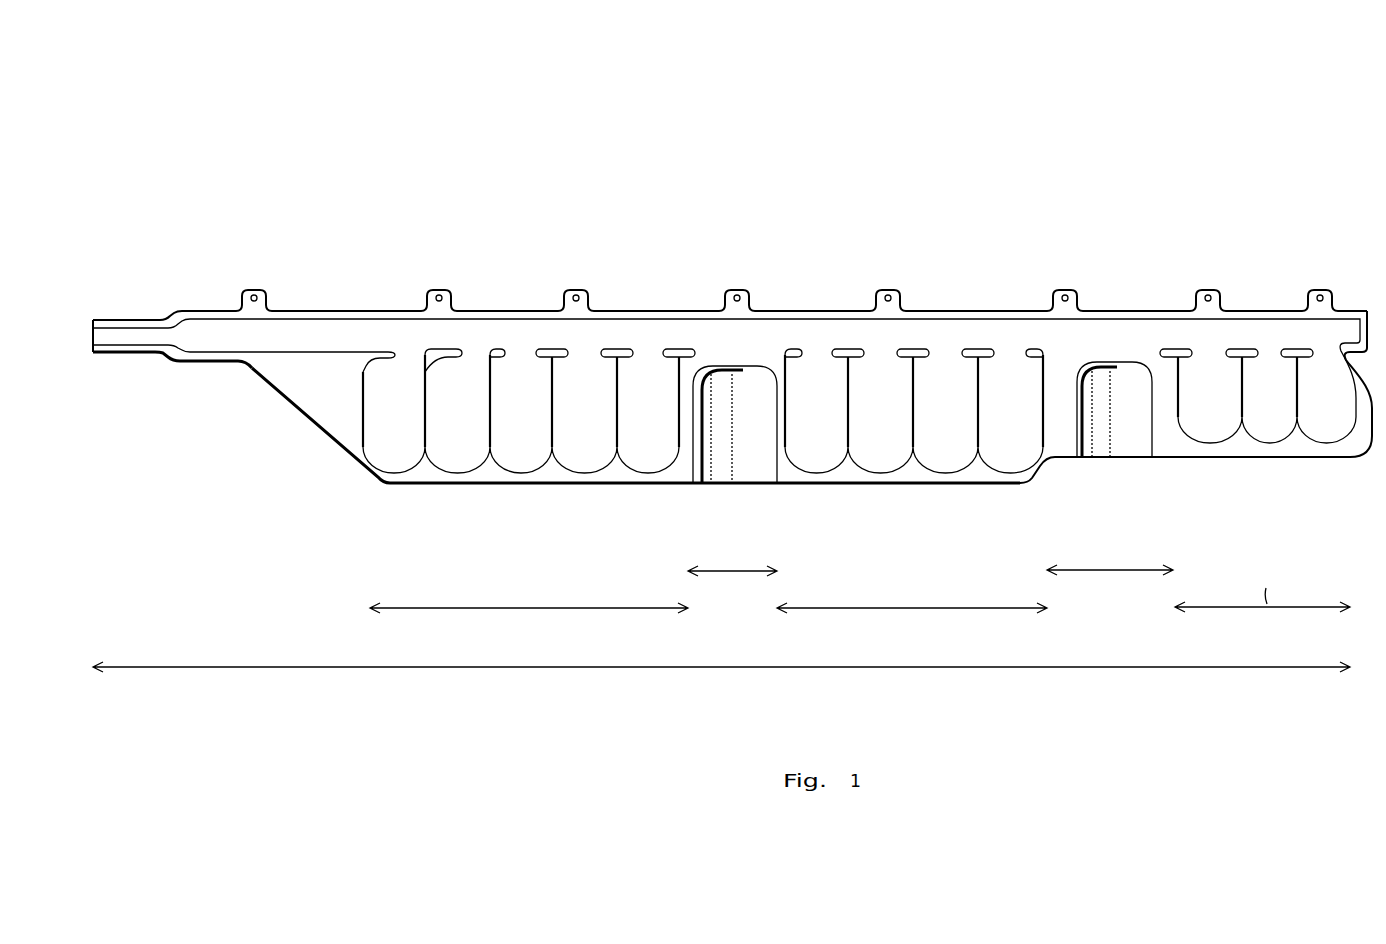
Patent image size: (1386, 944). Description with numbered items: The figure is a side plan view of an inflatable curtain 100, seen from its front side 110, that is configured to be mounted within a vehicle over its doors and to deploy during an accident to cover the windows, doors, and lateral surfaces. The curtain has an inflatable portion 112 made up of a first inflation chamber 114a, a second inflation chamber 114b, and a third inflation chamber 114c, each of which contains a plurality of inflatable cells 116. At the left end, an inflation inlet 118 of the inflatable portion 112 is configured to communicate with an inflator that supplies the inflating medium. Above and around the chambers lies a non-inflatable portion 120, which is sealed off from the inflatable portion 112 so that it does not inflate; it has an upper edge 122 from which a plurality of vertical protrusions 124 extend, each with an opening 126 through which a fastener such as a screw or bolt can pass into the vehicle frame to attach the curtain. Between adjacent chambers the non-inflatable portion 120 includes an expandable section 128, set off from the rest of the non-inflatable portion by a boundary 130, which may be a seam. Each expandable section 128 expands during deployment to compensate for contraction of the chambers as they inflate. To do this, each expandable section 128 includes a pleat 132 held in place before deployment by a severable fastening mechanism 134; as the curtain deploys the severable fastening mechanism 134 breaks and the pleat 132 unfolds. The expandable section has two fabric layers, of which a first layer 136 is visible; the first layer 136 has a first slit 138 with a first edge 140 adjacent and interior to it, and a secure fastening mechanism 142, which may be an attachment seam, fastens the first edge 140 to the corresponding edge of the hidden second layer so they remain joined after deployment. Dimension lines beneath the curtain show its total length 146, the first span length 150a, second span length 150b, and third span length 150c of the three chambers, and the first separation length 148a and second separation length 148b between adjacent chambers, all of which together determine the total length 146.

The inflatable curtain 100 is at (1276, 188).
The front side 110 is at (758, 332).
The inflatable portion 112 is at (318, 328).
The first inflation chamber 114a is at (495, 453).
The second inflation chamber 114b is at (884, 451).
The third inflation chamber 114c is at (1216, 435).
The inflatable cells 116 is at (513, 467).
The inflation inlet 118 is at (135, 328).
The non-inflatable portion 120 is at (317, 398).
The upper edge 122 is at (507, 310).
The vertical protrusions 124 is at (430, 295).
The opening 126 is at (440, 296).
The expandable section 128 is at (690, 498).
The boundary 130 is at (783, 473).
The pleat 132 is at (703, 368).
The severable fastening mechanism 134 is at (735, 473).
The first layer 136 is at (765, 362).
The first slit 138 is at (713, 367).
The first edge 140 is at (716, 375).
The secure fastening mechanism 142 is at (716, 473).
The total length 146 is at (962, 668).
The first separation length 148a is at (720, 571).
The second separation length 148b is at (1106, 570).
The first span length 150a is at (550, 608).
The second span length 150b is at (912, 608).
The third span length 150c is at (1256, 607).